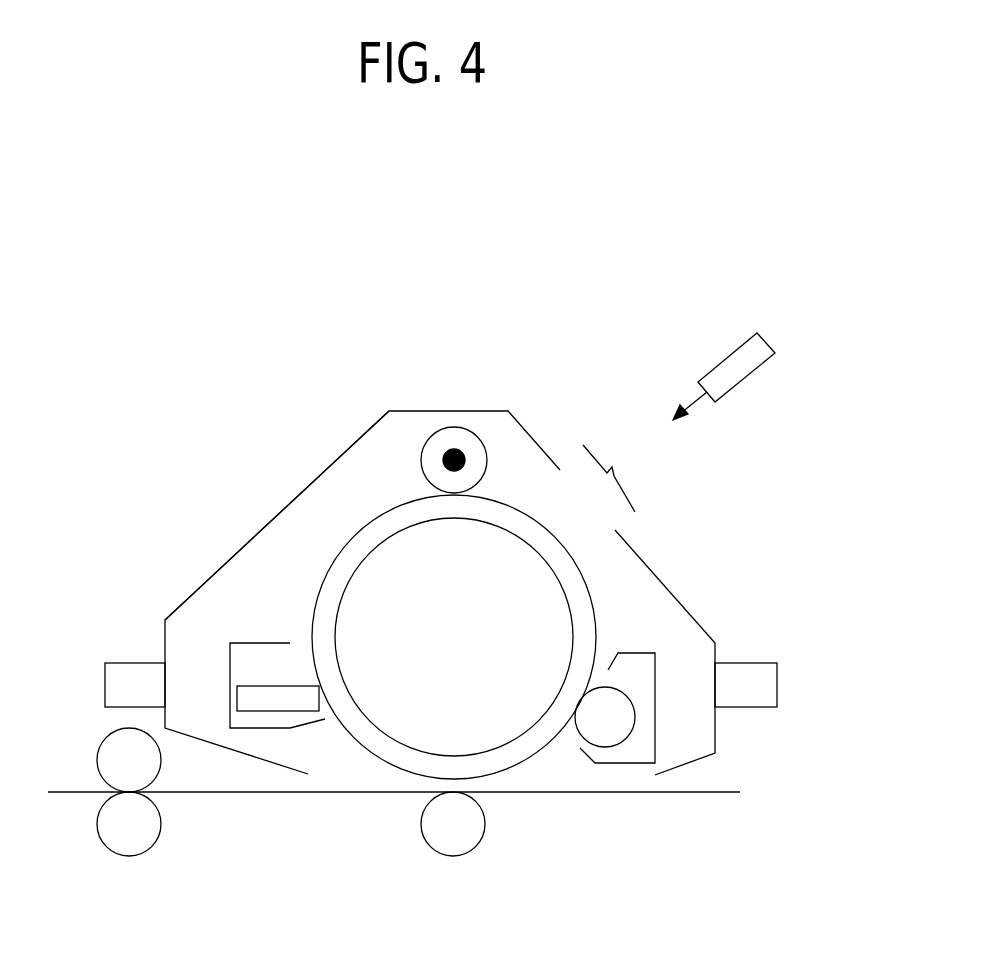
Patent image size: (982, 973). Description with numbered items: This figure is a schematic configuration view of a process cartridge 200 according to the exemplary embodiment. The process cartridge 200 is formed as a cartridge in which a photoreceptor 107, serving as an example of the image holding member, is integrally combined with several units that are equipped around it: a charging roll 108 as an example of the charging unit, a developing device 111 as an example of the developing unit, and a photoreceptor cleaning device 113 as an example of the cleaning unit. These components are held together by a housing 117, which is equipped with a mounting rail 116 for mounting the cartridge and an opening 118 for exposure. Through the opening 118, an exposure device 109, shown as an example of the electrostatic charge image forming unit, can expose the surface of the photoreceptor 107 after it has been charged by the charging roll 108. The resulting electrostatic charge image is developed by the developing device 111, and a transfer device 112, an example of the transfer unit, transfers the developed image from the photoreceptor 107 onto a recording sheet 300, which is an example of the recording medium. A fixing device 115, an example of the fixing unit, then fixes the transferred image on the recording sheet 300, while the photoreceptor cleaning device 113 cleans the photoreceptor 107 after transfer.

The process cartridge 200 is at (487, 328).
The photoreceptor 107 is at (360, 530).
The housing 117 is at (268, 523).
The charging roll 108 is at (452, 427).
The opening for exposure 118 is at (620, 478).
The exposure device 109 is at (725, 360).
The photoreceptor cleaning device 113 is at (250, 641).
The developing device 111 is at (630, 653).
The mounting rail 116 is at (122, 663).
The recording sheet 300 is at (677, 795).
The fixing device 115 is at (127, 856).
The transfer device 112 is at (453, 856).